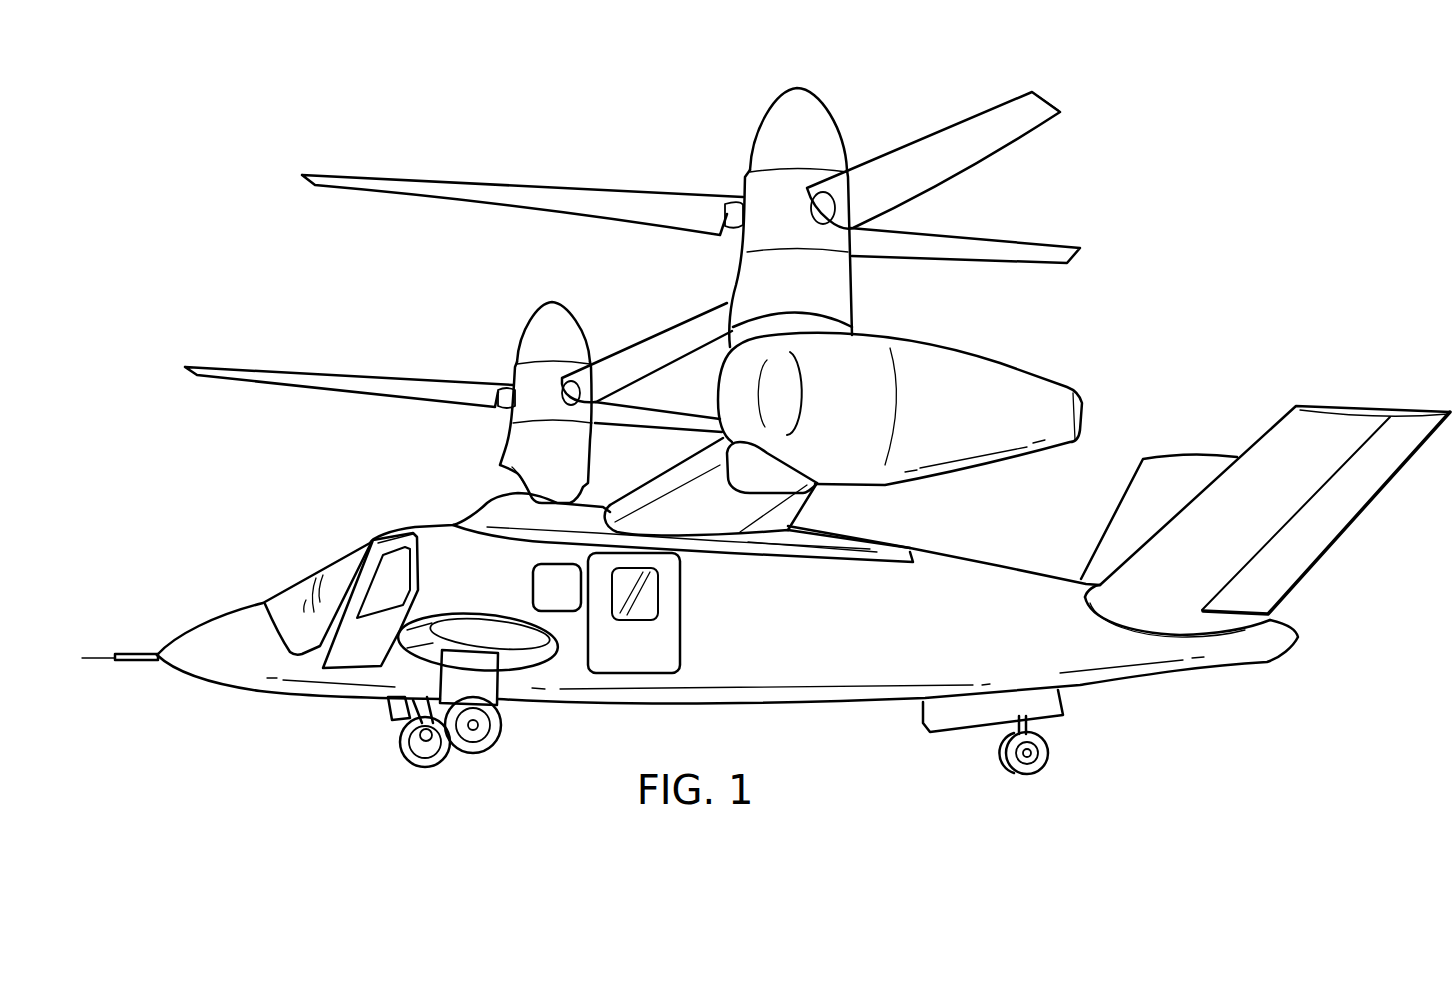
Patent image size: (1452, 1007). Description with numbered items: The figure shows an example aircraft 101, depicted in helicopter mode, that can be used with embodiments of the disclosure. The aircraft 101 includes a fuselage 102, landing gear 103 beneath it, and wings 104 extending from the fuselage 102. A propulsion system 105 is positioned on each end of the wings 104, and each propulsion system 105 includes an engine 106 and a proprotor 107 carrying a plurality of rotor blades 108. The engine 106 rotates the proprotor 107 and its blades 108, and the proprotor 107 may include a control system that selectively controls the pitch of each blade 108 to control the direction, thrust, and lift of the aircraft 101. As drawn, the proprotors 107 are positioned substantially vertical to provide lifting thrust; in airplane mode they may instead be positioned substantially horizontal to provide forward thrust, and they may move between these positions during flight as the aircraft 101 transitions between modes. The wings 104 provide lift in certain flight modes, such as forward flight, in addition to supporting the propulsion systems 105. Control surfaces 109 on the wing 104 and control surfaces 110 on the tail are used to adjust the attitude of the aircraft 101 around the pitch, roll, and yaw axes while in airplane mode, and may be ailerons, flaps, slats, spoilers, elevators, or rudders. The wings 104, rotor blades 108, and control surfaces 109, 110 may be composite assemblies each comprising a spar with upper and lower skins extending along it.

The aircraft 101 is at (1204, 171).
The fuselage 102 is at (836, 707).
The landing gear 103 is at (471, 755).
The wings 104 is at (688, 496).
The propulsion system 105 is at (714, 291).
The engine 106 is at (1002, 365).
The proprotor 107 is at (752, 133).
The rotor blades 108 is at (496, 185).
The control surfaces 109 is at (810, 508).
The control surfaces 110 is at (1183, 450).